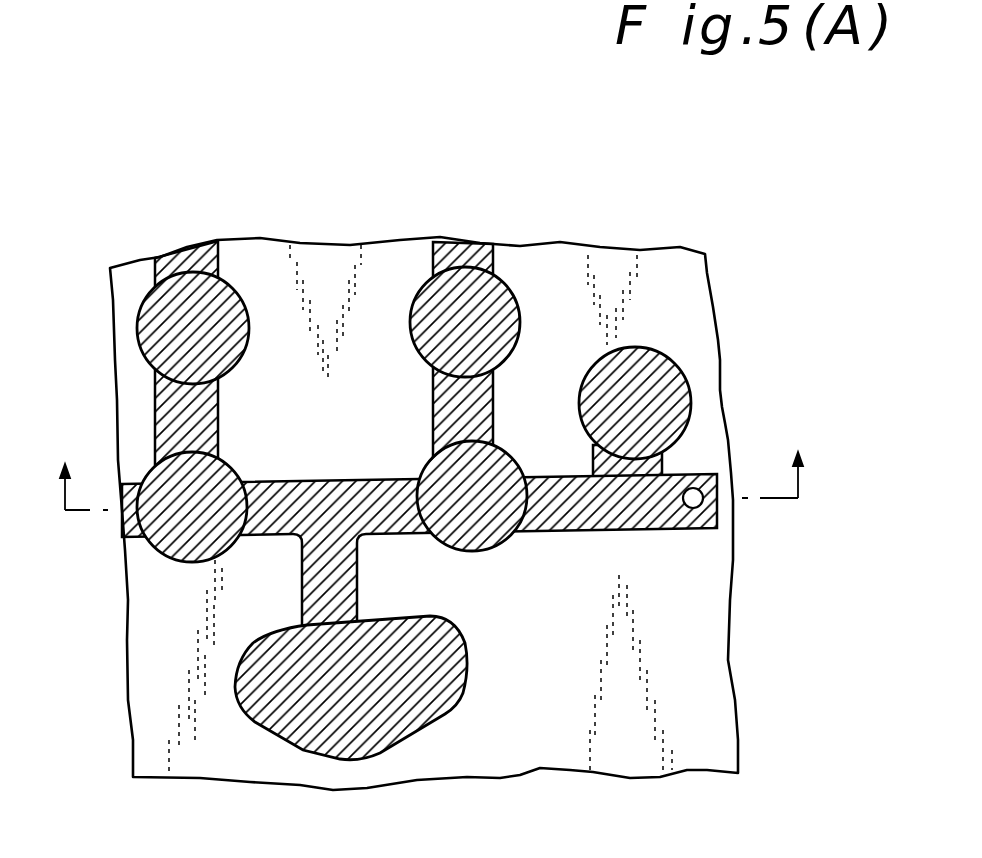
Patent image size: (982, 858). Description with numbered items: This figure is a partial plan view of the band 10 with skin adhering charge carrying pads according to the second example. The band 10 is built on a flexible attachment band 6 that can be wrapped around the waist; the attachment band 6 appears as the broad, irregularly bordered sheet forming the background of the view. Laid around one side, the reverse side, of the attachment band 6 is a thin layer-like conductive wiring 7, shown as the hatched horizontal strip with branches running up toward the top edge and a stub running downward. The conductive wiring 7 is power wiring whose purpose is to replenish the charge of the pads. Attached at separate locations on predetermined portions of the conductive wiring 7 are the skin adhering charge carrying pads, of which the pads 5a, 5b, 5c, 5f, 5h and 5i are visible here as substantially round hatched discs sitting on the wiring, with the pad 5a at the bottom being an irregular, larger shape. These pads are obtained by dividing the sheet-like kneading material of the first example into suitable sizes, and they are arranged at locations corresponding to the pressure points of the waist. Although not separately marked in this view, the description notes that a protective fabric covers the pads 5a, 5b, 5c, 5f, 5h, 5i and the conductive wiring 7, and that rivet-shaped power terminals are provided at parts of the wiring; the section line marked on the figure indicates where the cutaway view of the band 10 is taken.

The band with skin adhering charge carrying pads 10 is at (218, 197).
The skin adhering charge carrying pad 5a is at (313, 748).
The skin adhering charge carrying pad 5b is at (168, 558).
The skin adhering charge carrying pad 5c is at (138, 344).
The skin adhering charge carrying pad 5f is at (490, 549).
The skin adhering charge carrying pad 5h is at (520, 312).
The skin adhering charge carrying pad 5i is at (681, 371).
The attachment band 6 is at (712, 705).
The conductive wiring 7 is at (318, 481).